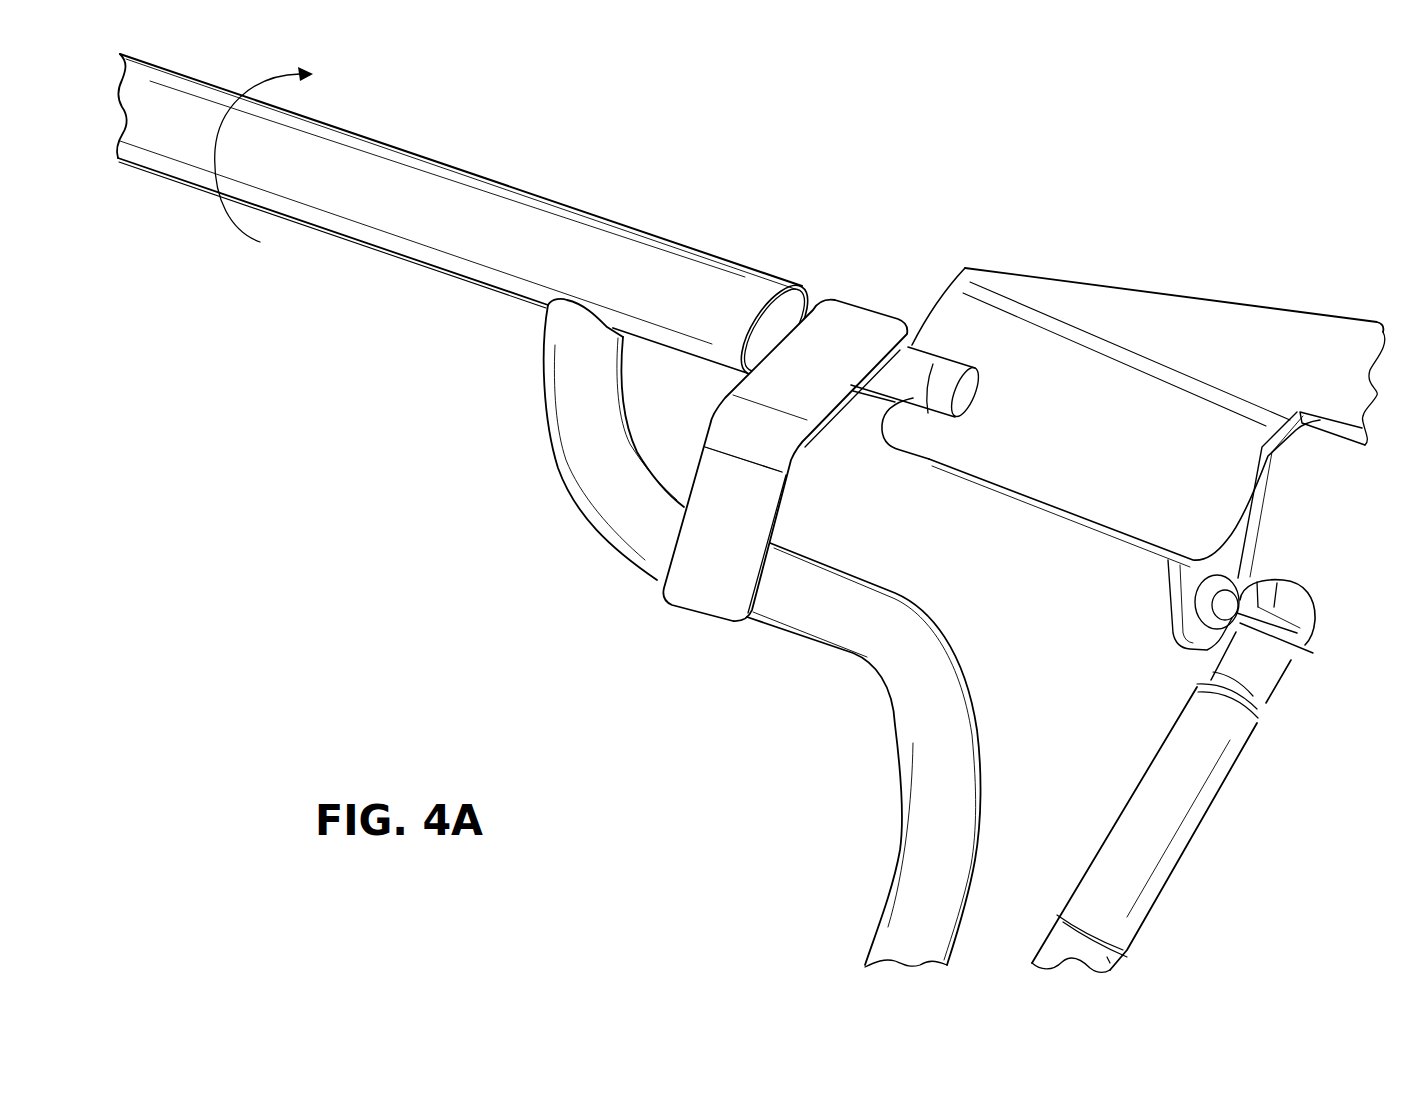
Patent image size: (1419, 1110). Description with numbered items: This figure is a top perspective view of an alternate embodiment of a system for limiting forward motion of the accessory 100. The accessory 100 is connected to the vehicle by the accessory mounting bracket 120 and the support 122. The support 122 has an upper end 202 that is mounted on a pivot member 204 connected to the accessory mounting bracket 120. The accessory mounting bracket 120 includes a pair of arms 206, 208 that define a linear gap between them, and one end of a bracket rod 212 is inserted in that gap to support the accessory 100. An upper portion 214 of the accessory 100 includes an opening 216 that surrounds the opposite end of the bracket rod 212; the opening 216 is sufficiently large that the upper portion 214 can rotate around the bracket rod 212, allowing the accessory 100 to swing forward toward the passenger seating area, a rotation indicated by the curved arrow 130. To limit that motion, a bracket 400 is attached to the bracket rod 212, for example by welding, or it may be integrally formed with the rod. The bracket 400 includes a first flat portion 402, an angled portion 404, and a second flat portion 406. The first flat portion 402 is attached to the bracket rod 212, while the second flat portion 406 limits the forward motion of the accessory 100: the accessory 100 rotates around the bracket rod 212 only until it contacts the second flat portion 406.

The accessory 100 is at (550, 441).
The accessory mounting bracket 120 is at (1133, 423).
The support 122 is at (1197, 837).
The rotation direction 130 is at (233, 224).
The upper end 202 is at (1313, 637).
The pivot member 204 is at (1240, 588).
The arm 206 is at (903, 430).
The arm 208 is at (930, 330).
The bracket rod 212 is at (925, 345).
The upper portion 214 is at (402, 155).
The opening 216 is at (806, 300).
The bracket 400 is at (785, 409).
The first flat portion 402 is at (834, 370).
The angled portion 404 is at (770, 437).
The second flat portion 406 is at (741, 530).